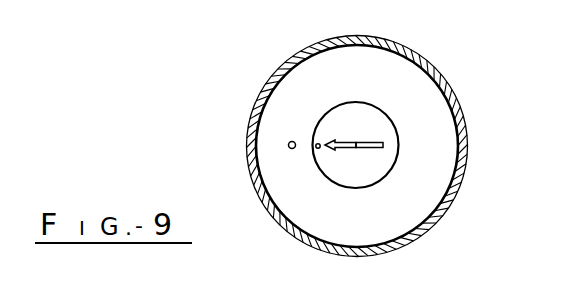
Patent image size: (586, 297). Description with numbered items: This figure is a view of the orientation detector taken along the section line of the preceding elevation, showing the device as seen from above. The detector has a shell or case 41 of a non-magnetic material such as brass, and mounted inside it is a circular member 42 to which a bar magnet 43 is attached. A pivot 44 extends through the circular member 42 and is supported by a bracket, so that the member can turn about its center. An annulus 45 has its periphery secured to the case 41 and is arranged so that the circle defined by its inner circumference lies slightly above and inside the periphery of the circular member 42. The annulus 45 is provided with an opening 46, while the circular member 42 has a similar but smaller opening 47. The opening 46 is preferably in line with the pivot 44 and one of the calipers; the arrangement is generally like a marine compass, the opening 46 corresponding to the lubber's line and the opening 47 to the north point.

The shell or case 41 is at (405, 50).
The circular member 42 is at (385, 122).
The bar magnet 43 is at (339, 141).
The pivot 44 is at (351, 149).
The annulus 45 is at (357, 146).
The opening 46 is at (292, 141).
The opening 47 is at (318, 150).